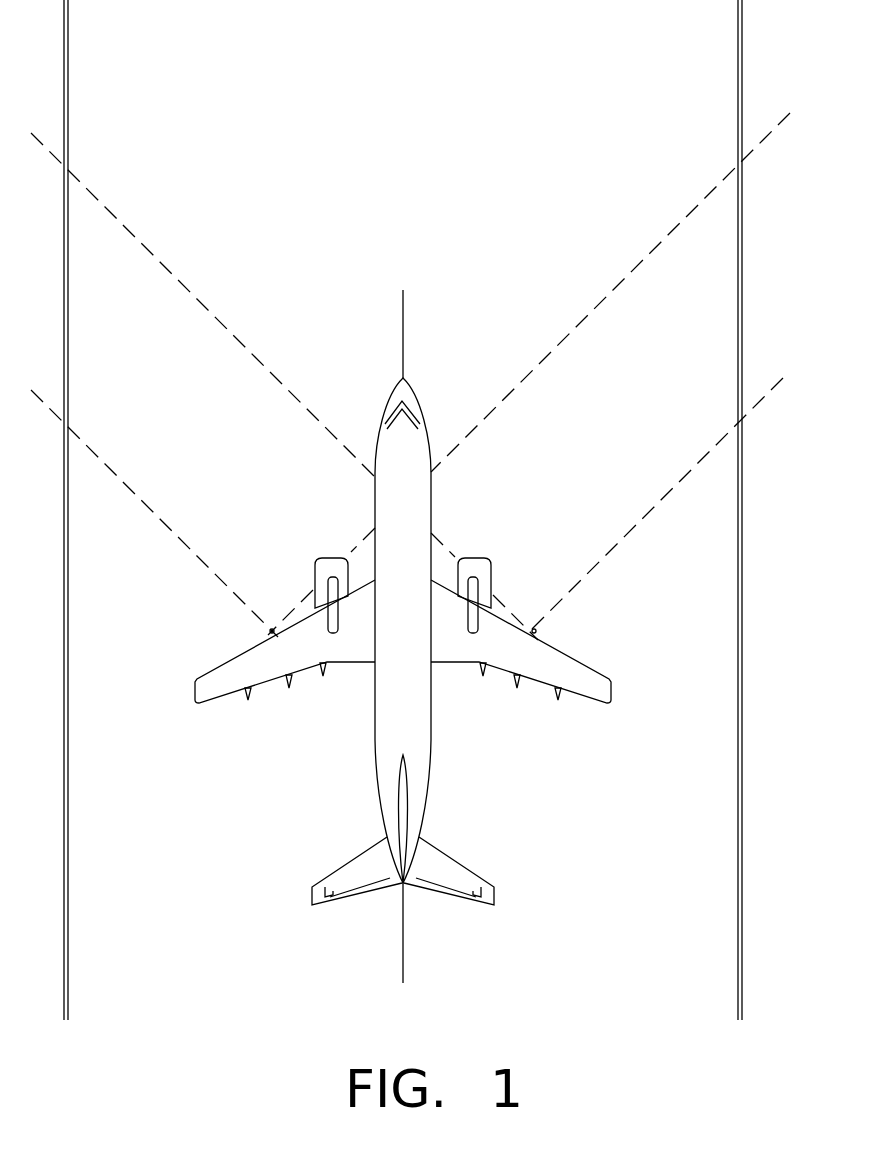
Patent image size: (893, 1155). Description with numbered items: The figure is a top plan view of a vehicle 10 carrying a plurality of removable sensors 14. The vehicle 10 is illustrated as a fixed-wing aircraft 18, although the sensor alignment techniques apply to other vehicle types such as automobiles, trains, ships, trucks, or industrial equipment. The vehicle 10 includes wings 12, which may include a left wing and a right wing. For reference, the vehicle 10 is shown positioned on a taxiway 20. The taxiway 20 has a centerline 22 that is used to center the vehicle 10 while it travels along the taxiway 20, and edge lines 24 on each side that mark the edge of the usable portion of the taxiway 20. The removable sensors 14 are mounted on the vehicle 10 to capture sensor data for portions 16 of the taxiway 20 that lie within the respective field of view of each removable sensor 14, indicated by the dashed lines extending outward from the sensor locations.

The vehicle 10 is at (385, 498).
The wings 12 is at (215, 677).
The removable sensors 14 is at (275, 636).
The portions of the taxiway 16 is at (205, 572).
The fixed-wing aircraft 18 is at (352, 705).
The taxiway 20 is at (472, 83).
The centerline 22 is at (405, 316).
The edge lines 24 is at (68, 90).